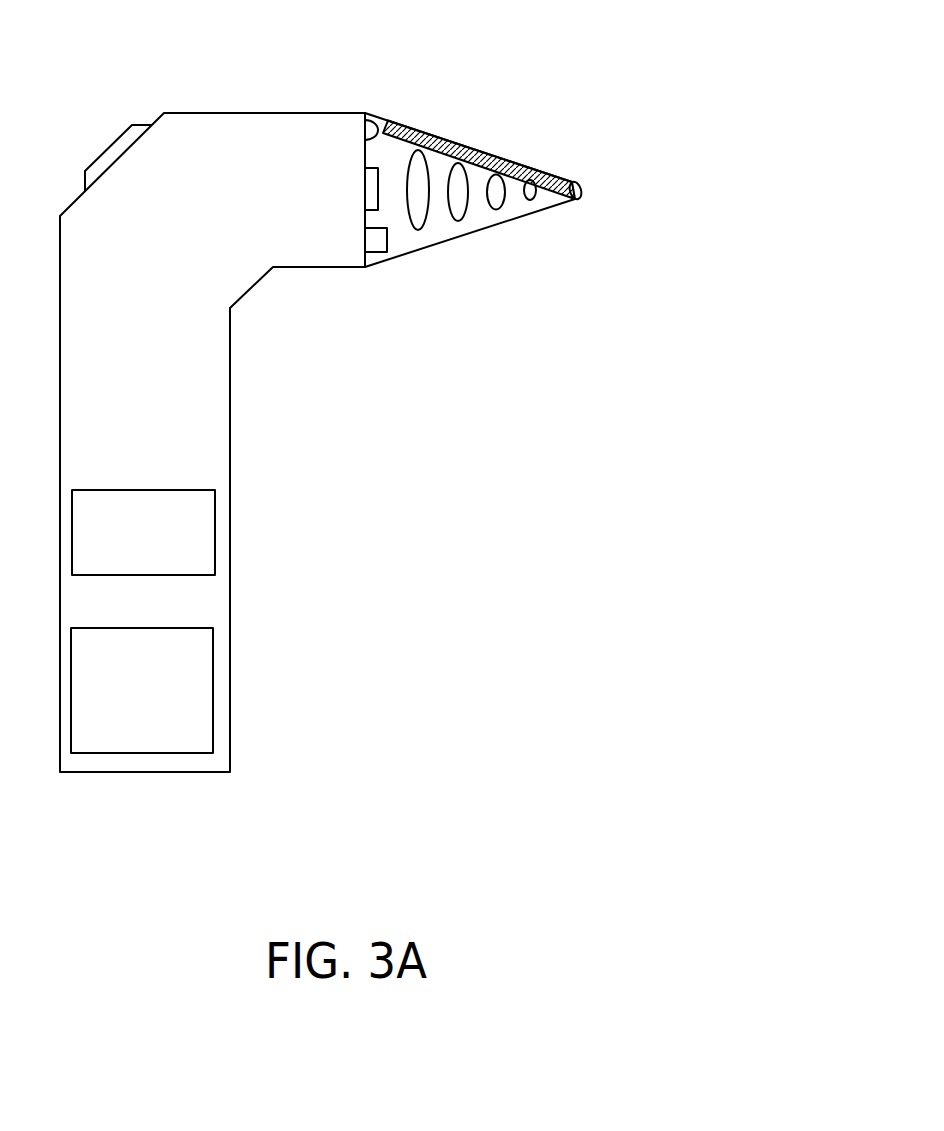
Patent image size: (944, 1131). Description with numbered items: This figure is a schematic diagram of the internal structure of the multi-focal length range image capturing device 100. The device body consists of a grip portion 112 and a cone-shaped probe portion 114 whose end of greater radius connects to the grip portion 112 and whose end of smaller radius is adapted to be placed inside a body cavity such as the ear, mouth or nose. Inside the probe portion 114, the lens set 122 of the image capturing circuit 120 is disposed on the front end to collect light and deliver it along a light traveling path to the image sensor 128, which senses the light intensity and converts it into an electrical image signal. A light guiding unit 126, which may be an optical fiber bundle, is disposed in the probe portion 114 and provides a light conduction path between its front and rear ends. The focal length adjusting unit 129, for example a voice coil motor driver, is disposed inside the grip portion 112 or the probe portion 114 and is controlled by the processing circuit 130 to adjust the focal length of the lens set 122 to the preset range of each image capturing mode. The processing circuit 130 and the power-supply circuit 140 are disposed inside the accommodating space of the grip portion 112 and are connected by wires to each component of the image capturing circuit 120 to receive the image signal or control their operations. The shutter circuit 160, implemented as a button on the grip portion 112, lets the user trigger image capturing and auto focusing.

The multi-focal length range image capturing device 100 is at (747, 856).
The grip portion 112 is at (239, 98).
The probe portion 114 is at (444, 395).
The image capturing circuit 120 is at (438, 395).
The lens set 122 is at (530, 255).
The light guiding unit 126 is at (467, 143).
The image sensor 128 is at (372, 192).
The focal length adjusting unit 129 is at (375, 253).
The processing circuit 130 is at (143, 490).
The power-supply circuit 140 is at (143, 628).
The shutter circuit 160 is at (107, 149).